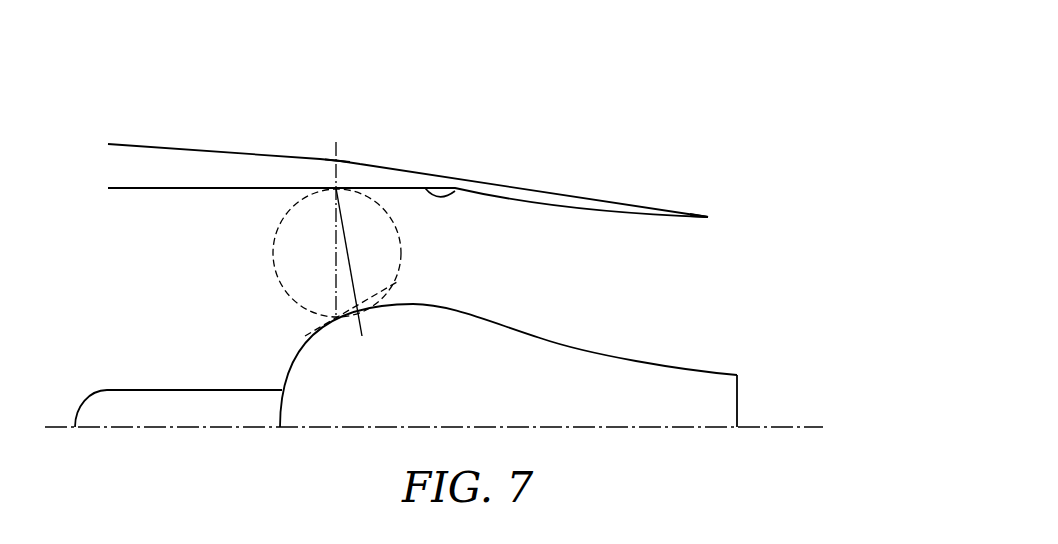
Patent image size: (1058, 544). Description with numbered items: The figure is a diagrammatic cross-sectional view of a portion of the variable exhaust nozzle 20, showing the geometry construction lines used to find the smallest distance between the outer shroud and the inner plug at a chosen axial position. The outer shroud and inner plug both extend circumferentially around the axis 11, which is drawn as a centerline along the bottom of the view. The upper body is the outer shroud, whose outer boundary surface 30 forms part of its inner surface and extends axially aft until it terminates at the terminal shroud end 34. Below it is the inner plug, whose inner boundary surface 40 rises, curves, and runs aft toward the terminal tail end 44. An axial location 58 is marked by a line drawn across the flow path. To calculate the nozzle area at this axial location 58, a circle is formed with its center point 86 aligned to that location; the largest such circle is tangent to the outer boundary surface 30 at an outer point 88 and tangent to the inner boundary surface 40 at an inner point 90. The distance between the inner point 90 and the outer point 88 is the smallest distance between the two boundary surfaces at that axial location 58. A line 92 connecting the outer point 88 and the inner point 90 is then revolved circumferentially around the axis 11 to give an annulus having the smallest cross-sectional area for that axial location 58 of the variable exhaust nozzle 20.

The axis 11 is at (163, 428).
The variable exhaust nozzle 20 is at (847, 97).
The outer boundary surface 30 is at (455, 191).
The terminal shroud end 34 is at (712, 217).
The inner boundary surface 40 is at (487, 318).
The terminal tail end 44 is at (737, 375).
The axial location 58 is at (347, 150).
The center point 86 is at (326, 270).
The outer point 88 is at (334, 184).
The inner point 90 is at (362, 326).
The line 92 is at (328, 232).